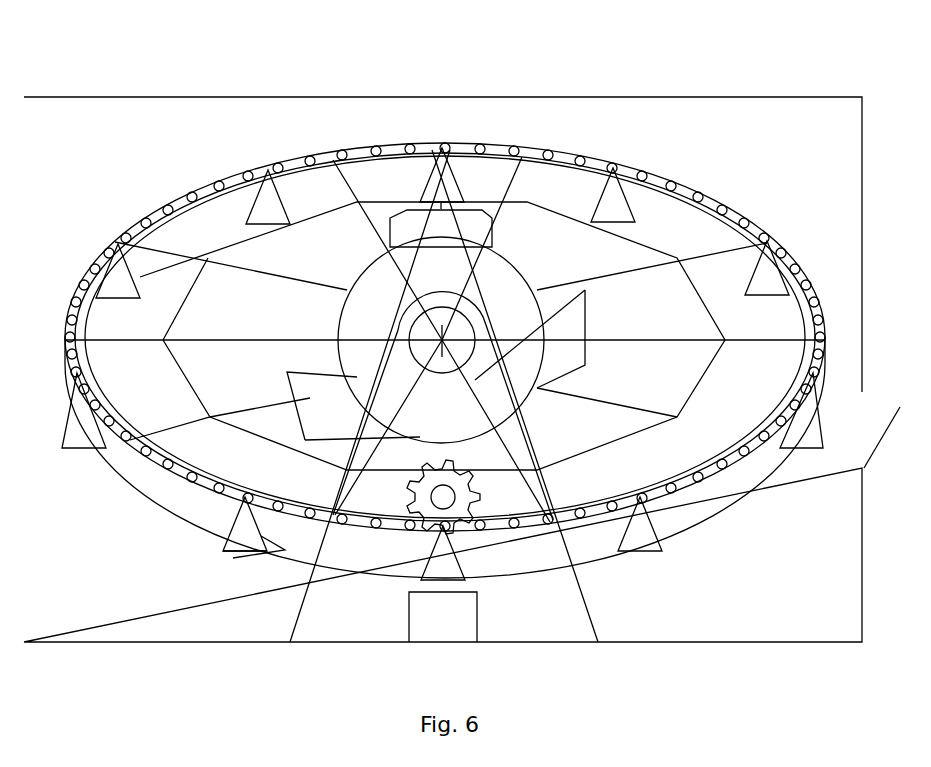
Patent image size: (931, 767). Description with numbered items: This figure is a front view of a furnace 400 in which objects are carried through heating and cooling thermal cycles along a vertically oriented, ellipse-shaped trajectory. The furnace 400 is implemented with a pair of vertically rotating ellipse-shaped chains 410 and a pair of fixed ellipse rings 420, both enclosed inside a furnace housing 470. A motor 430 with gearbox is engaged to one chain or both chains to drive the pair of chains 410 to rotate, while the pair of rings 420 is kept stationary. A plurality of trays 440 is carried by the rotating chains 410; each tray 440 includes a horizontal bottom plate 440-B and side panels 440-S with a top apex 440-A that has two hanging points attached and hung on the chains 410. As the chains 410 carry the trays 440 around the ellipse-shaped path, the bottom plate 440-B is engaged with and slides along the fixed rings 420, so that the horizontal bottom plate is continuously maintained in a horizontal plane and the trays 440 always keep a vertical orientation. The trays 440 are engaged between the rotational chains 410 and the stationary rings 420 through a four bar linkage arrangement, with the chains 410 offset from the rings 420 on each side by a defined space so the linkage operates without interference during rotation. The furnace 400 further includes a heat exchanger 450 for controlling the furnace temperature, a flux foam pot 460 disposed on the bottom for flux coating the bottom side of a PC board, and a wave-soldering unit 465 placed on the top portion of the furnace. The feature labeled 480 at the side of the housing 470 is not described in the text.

The furnace 400 is at (643, 68).
The vertically rotating chains 410 is at (187, 195).
The fixed ellipse rings 420 is at (723, 517).
The motor 430 is at (427, 510).
The trays 440 is at (615, 203).
The top apex 440-A is at (245, 497).
The horizontal bottom plate 440-B is at (227, 558).
The side panels 440-S is at (278, 560).
The heat exchanger 450 is at (330, 407).
The flux foam pot 460 is at (458, 623).
The wave-soldering unit 465 is at (422, 223).
The furnace housing 470 is at (712, 97).
The access door 480 is at (874, 435).